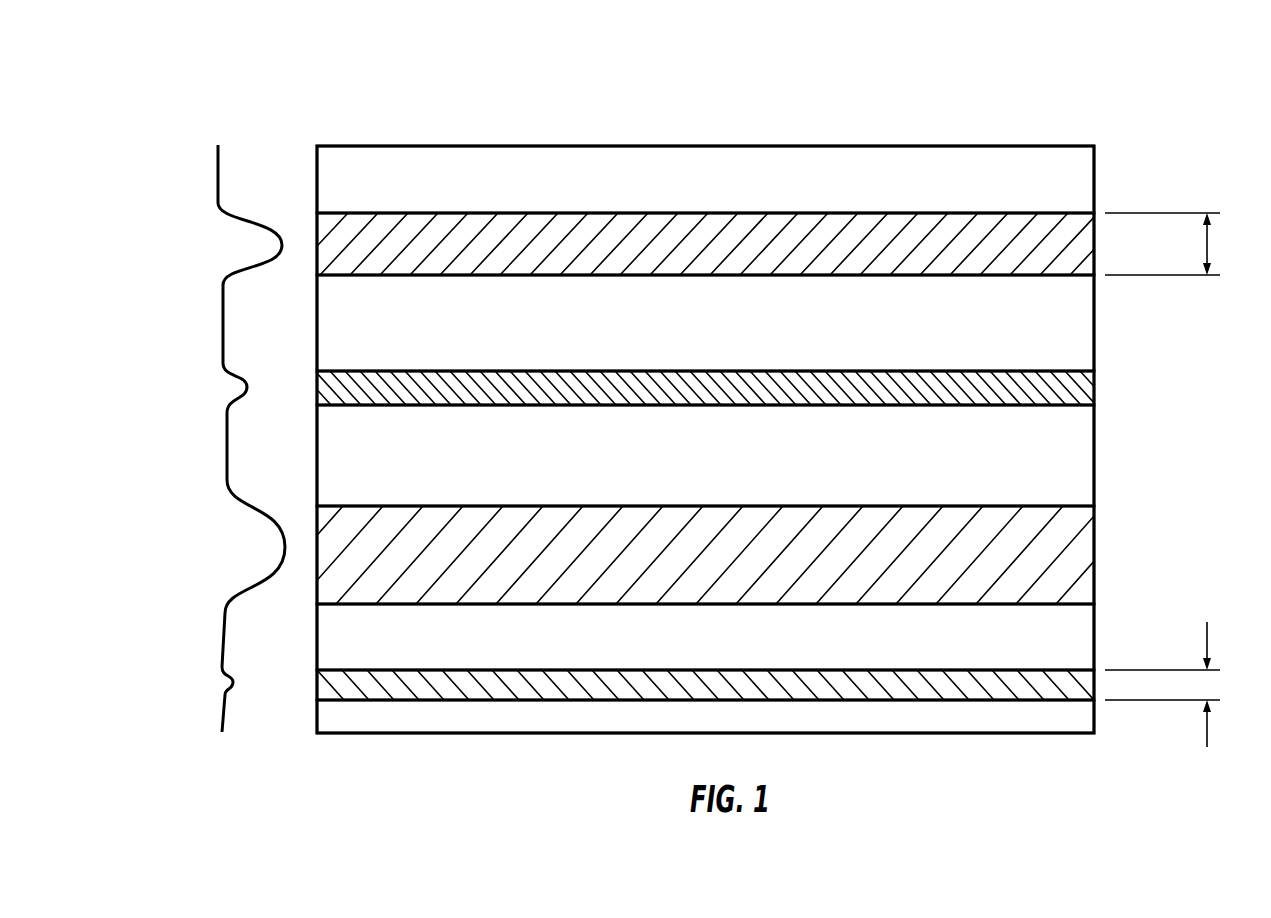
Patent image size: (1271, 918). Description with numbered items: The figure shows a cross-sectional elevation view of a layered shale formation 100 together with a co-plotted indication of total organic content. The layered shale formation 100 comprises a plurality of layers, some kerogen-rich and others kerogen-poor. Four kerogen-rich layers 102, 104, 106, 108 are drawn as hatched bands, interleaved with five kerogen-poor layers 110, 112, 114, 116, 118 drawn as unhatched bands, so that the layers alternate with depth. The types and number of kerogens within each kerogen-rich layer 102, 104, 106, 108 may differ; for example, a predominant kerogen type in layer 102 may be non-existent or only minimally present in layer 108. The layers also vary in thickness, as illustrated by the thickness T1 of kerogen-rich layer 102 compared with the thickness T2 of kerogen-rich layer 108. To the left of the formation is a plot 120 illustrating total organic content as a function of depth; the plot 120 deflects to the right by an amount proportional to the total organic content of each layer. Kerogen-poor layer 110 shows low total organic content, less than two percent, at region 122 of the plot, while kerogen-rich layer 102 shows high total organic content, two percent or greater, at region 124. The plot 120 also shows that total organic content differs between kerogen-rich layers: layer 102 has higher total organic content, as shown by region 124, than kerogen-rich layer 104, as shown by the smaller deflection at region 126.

The layered shale formation 100 is at (383, 89).
The kerogen-rich layer 102 is at (1080, 238).
The kerogen-rich layer 104 is at (1080, 388).
The kerogen-rich layer 106 is at (1080, 541).
The kerogen-rich layer 108 is at (1085, 684).
The kerogen-poor layer 110 is at (1082, 180).
The kerogen-poor layer 112 is at (1080, 310).
The kerogen-poor layer 114 is at (1080, 440).
The kerogen-poor layer 116 is at (1080, 622).
The kerogen-poor layer 118 is at (1080, 723).
The plot 120 is at (215, 138).
The region of the plot 122 is at (218, 163).
The region of the plot 124 is at (282, 243).
The region of the plot 126 is at (247, 387).
The thickness of layer 102 T1 is at (1213, 242).
The thickness of layer 108 T2 is at (1207, 640).